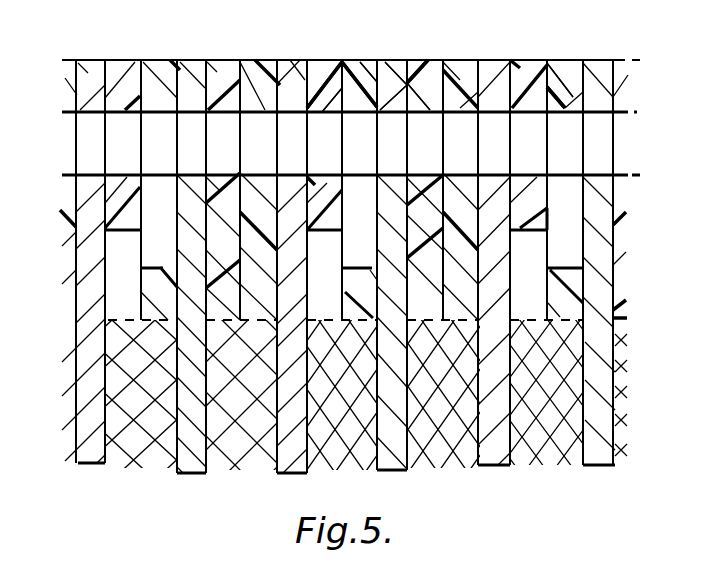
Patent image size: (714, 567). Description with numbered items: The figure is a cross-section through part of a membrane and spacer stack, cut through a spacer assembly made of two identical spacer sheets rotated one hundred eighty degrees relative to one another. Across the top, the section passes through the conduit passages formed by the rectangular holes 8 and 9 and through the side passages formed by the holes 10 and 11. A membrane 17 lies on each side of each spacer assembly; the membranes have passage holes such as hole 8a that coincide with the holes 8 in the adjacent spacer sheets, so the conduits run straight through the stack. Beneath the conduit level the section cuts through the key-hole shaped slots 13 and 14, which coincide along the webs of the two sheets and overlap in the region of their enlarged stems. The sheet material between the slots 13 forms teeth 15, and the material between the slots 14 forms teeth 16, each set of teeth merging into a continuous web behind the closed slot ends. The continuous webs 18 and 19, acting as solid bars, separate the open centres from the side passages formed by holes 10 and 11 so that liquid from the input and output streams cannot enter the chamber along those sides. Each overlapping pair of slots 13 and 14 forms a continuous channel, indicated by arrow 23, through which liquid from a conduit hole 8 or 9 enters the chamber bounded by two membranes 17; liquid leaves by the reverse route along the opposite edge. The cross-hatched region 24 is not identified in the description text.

The rectangular hole 8 is at (565, 127).
The membrane passage hole 8a is at (593, 137).
The rectangular hole 9 is at (527, 130).
The side passage hole 10 is at (457, 135).
The side passage hole 11 is at (425, 130).
The slot 13 is at (159, 193).
The slot 14 is at (123, 257).
The teeth 15 is at (140, 300).
The teeth 16 is at (120, 187).
The membrane 17 is at (597, 448).
The continuous web 18 is at (225, 197).
The continuous web 19 is at (260, 193).
The arrow 23 is at (327, 272).
The cross-hatched region 24 is at (637, 380).